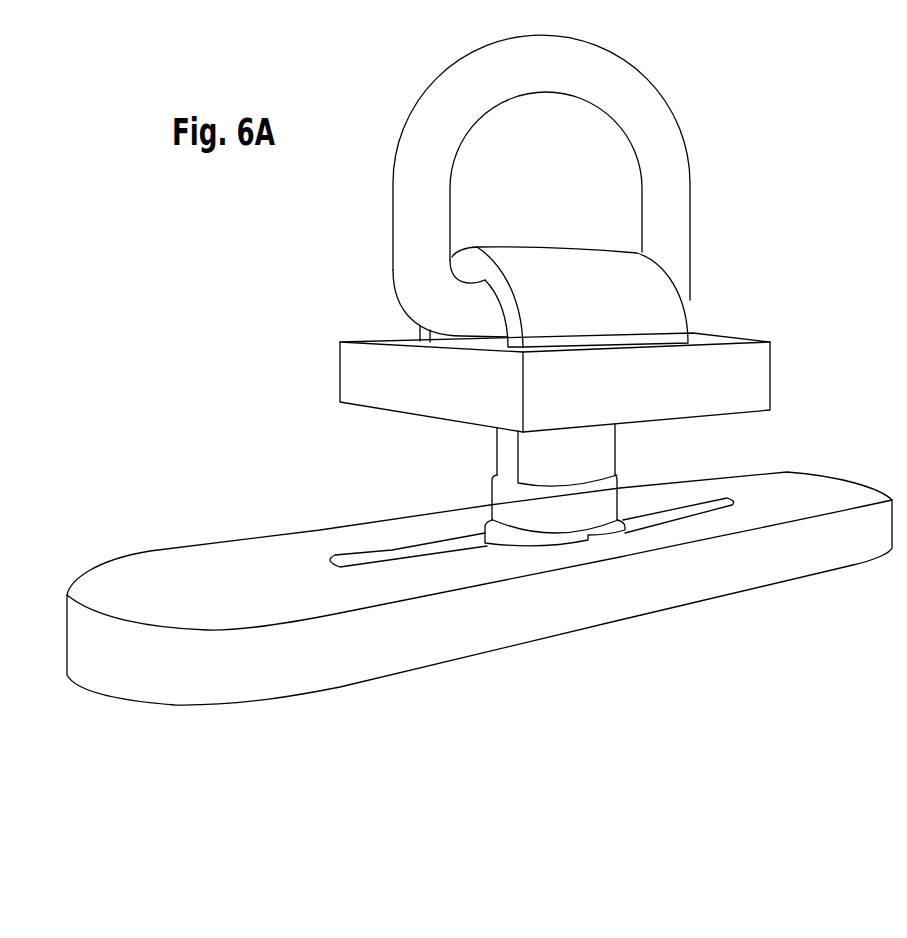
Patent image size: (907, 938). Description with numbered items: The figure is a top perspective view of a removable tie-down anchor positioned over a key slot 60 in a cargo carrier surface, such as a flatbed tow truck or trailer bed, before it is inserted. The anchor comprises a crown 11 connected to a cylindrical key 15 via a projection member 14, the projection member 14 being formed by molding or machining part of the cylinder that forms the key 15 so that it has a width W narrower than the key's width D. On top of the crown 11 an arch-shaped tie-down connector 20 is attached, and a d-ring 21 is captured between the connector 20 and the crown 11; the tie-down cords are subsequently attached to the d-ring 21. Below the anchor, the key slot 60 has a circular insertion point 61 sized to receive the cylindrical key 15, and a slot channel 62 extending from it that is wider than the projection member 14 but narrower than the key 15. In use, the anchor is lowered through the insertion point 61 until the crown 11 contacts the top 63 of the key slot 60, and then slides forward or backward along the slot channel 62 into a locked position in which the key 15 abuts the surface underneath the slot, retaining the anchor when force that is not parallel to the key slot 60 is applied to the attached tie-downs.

The d-ring 21 is at (677, 153).
The tie-down connector 20 is at (688, 313).
The crown 11 is at (772, 378).
The projection member 14 is at (618, 453).
The key 15 is at (492, 500).
The key slot 60 is at (479, 574).
The insertion point 61 is at (570, 543).
The slot channel 62 is at (391, 549).
The top of the key slot 63 is at (200, 600).